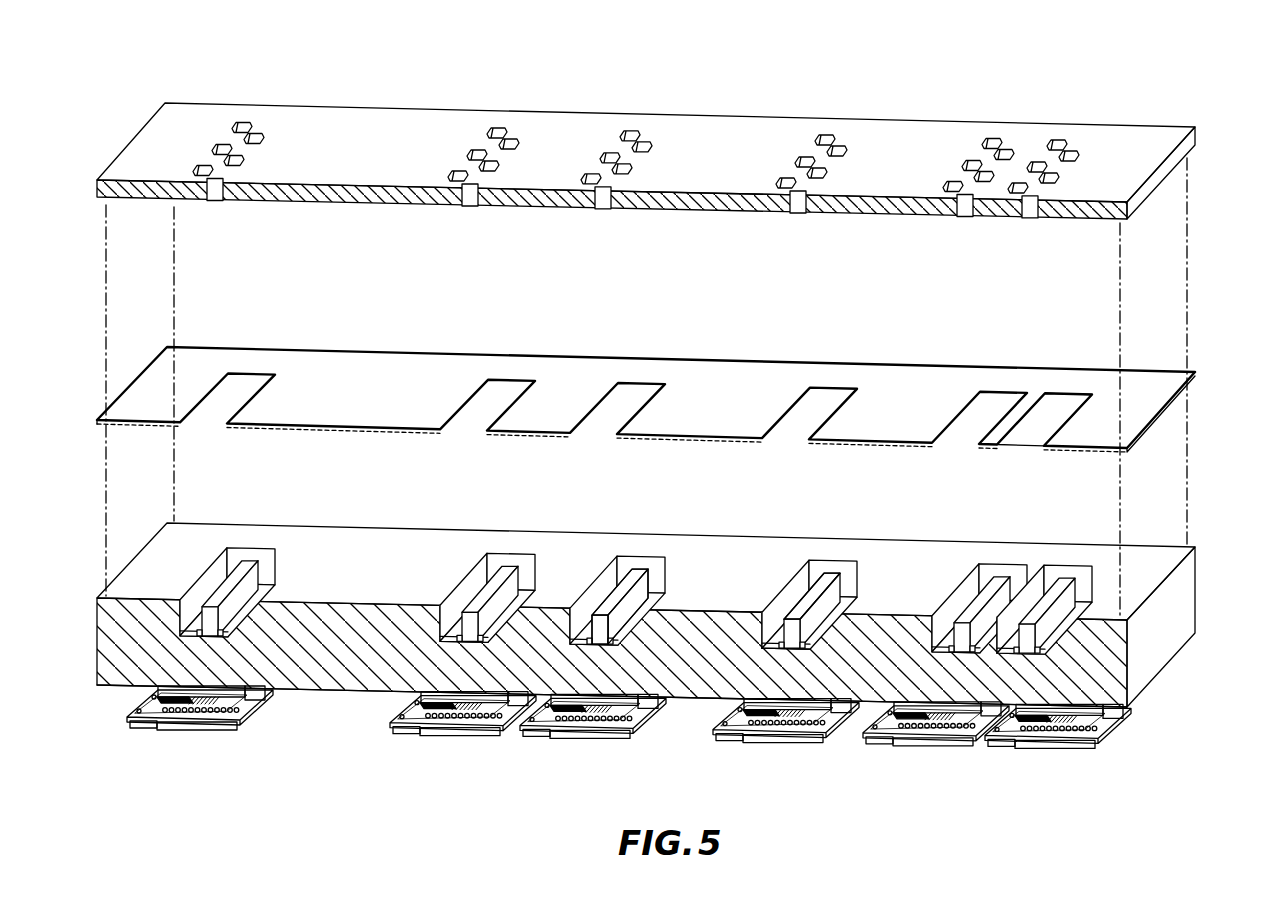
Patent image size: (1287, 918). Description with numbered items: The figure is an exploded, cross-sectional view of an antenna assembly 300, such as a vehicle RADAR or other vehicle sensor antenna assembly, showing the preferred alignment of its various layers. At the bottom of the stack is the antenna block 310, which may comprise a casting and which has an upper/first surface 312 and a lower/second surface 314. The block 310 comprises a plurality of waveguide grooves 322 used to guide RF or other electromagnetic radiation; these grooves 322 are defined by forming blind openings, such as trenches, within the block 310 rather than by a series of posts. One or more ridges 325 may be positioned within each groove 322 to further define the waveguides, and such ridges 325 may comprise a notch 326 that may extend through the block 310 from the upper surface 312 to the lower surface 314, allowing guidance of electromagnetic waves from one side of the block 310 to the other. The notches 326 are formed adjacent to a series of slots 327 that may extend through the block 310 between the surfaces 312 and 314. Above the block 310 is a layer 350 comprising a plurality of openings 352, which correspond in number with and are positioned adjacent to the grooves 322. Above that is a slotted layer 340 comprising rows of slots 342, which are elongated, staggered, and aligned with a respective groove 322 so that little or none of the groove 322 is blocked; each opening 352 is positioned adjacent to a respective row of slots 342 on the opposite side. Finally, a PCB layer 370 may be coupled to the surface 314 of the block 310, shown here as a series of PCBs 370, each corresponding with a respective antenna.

The antenna assembly 300 is at (1105, 70).
The antenna block 310 is at (687, 641).
The upper/first surface 312 is at (1158, 553).
The lower/second surface 314 is at (1110, 707).
The waveguide groove 322 is at (496, 558).
The ridge 325 is at (633, 573).
The notch 326 is at (800, 608).
The slot 327 is at (810, 647).
The slotted layer 340 is at (672, 135).
The slot 342 is at (973, 197).
The layer 350 is at (676, 385).
The opening 352 is at (1055, 407).
The PCB layer 370 is at (195, 736).